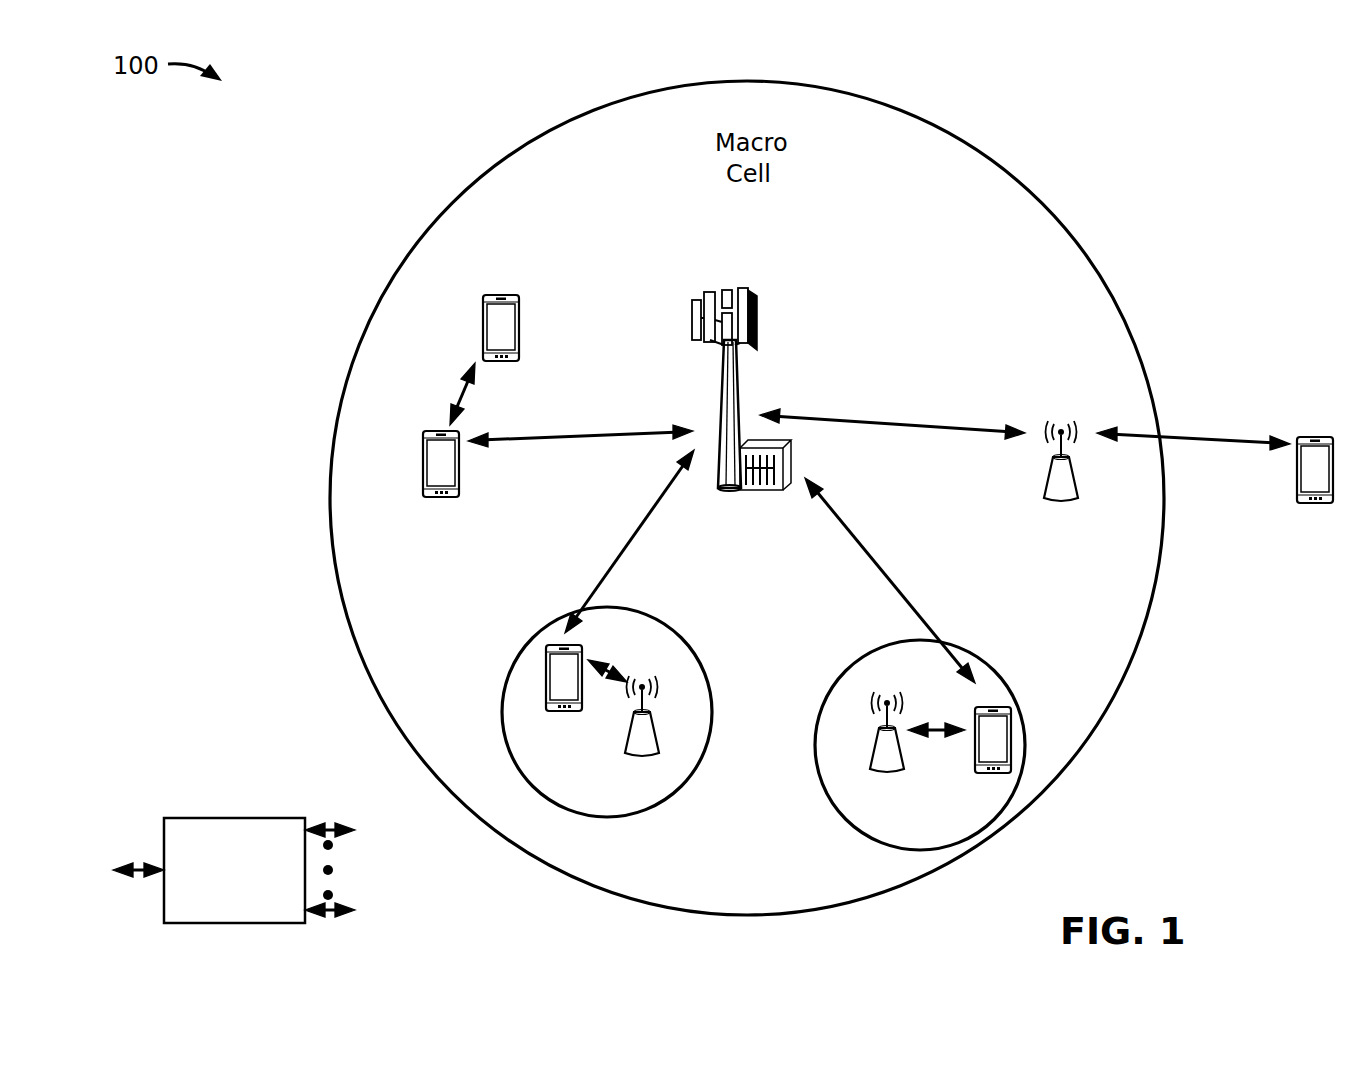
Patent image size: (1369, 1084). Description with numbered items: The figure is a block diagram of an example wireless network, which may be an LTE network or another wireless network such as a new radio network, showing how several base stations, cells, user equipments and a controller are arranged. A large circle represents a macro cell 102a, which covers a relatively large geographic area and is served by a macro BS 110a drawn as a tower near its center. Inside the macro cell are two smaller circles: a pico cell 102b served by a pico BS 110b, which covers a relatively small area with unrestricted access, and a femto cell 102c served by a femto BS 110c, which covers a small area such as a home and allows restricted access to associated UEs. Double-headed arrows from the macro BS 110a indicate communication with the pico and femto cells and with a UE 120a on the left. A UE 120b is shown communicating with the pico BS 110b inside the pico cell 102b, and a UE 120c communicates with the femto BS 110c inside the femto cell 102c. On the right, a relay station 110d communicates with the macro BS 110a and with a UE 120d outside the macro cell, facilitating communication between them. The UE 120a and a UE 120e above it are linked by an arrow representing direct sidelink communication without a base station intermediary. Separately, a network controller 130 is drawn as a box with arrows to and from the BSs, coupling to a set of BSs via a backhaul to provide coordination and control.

The macro cell 102a is at (1028, 185).
The pico cell 102b is at (700, 648).
The femto cell 102c is at (860, 655).
The macro BS 110a is at (738, 278).
The pico BS 110b is at (668, 740).
The femto BS 110c is at (870, 752).
The relay station 110d is at (1065, 422).
The UE 120a is at (423, 462).
The UE 120b is at (550, 712).
The UE 120c is at (980, 774).
The UE 120d is at (1326, 436).
The UE 120e is at (483, 312).
The network controller 130 is at (232, 818).